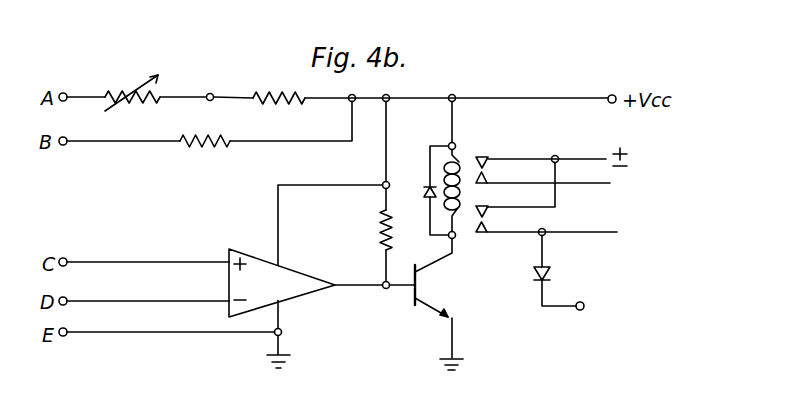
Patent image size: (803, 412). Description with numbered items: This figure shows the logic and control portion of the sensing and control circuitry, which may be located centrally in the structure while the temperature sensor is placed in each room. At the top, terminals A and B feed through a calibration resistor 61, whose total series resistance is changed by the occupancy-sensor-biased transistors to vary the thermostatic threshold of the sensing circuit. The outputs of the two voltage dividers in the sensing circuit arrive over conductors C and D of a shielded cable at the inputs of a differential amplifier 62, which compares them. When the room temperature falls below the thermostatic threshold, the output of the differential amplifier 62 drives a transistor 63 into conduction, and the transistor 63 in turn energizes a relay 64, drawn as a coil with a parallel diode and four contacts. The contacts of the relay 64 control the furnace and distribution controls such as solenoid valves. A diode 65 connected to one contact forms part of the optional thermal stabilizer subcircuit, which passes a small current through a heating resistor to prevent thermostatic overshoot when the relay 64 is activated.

The calibration resistor 61 is at (128, 88).
The differential amplifier 62 is at (257, 253).
The transistor 63 is at (410, 290).
The relay 64 is at (461, 158).
The diode 65 is at (555, 268).